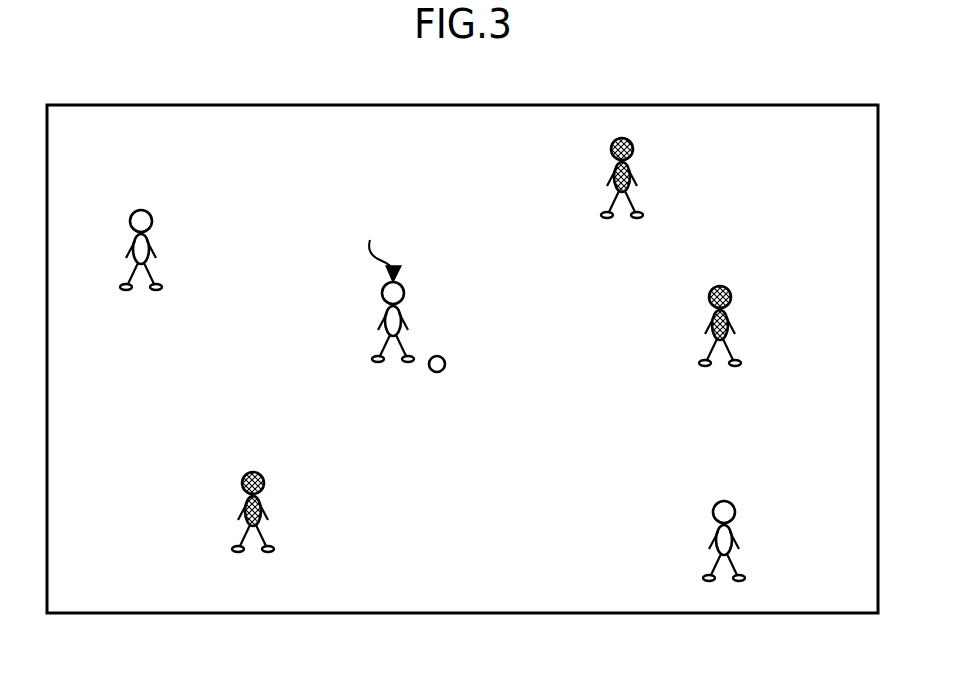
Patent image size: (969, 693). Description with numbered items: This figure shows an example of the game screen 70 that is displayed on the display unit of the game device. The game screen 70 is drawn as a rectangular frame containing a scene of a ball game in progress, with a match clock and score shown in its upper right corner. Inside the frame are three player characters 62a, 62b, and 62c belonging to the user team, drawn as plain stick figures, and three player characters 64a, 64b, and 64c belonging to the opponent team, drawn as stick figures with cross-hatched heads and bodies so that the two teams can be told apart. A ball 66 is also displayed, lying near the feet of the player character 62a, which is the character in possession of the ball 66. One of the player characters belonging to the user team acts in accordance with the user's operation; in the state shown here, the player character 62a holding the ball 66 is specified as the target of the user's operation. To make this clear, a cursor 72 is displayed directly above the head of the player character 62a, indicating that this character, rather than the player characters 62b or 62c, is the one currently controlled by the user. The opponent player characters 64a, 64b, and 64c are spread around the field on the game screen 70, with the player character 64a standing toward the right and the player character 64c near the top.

The player character 62a is at (405, 292).
The player character 62b is at (726, 500).
The player character 62c is at (149, 210).
The player character 64a is at (732, 295).
The player character 64b is at (253, 471).
The player character 64c is at (634, 147).
The ball 66 is at (437, 373).
The game screen 70 is at (204, 615).
The cursor 72 is at (376, 246).